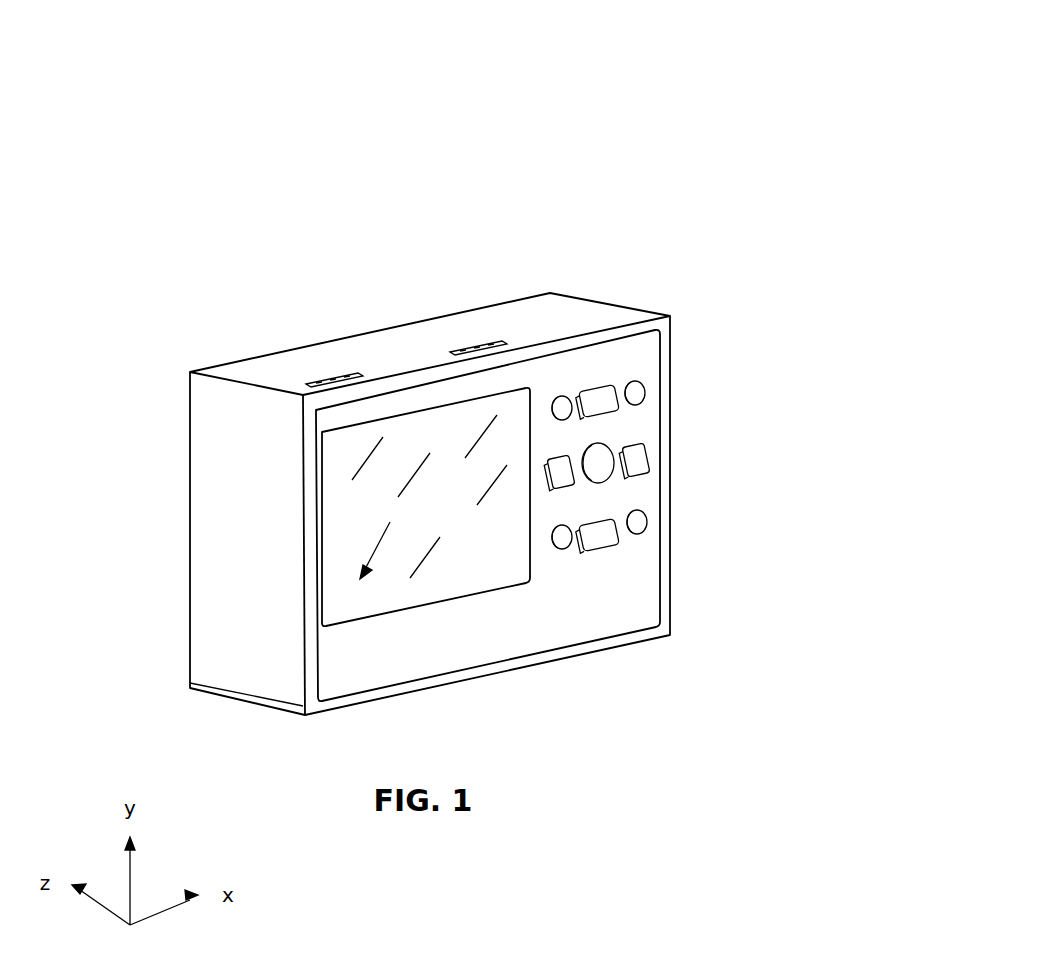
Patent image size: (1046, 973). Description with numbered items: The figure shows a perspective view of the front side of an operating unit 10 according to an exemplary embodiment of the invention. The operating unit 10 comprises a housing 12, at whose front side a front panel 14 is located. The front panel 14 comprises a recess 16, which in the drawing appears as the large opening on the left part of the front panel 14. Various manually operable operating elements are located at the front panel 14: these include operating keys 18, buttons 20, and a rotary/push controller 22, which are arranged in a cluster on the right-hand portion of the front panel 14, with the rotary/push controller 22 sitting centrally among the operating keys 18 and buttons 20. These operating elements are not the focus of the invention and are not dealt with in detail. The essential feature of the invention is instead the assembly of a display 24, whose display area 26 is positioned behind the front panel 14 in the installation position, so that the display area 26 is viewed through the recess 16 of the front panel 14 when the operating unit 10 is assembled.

The operating unit 10 is at (567, 172).
The housing 12 is at (410, 337).
The front panel 14 is at (637, 592).
The recess 16 is at (425, 605).
The operating keys 18 is at (597, 392).
The buttons 20 is at (562, 400).
The rotary/push controller 22 is at (608, 447).
The display 24 is at (385, 493).
The display area 26 is at (360, 578).